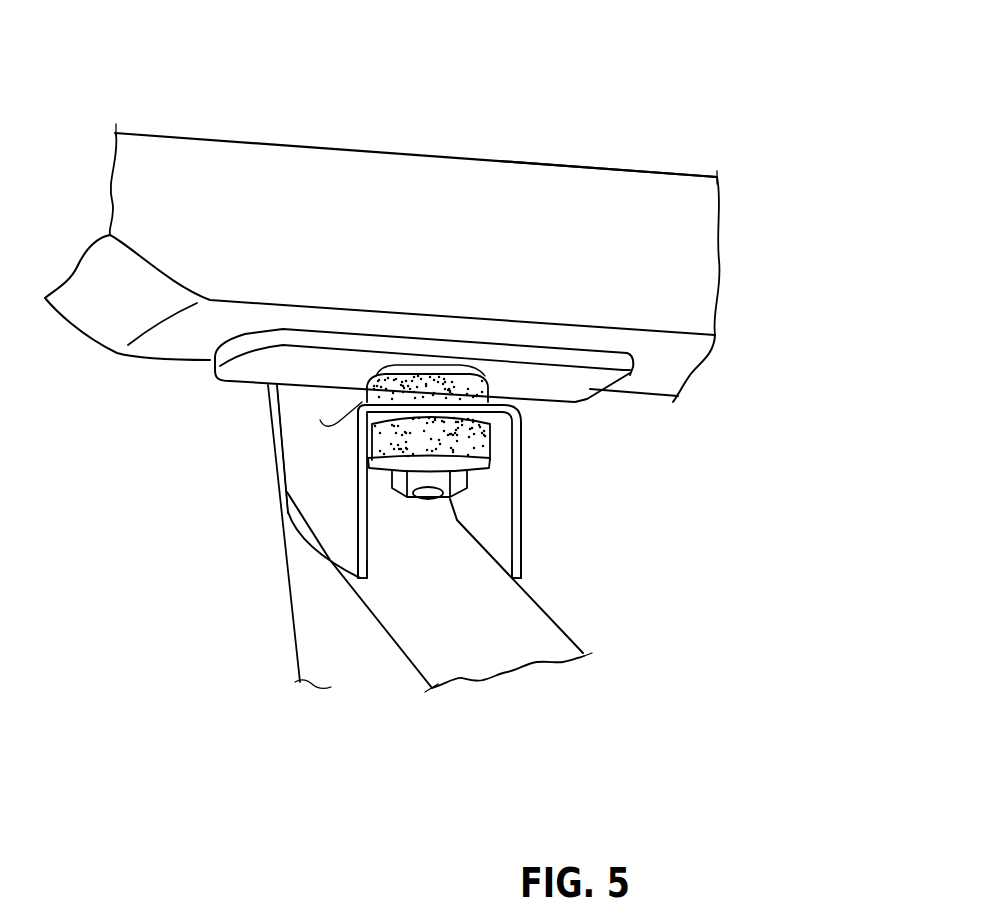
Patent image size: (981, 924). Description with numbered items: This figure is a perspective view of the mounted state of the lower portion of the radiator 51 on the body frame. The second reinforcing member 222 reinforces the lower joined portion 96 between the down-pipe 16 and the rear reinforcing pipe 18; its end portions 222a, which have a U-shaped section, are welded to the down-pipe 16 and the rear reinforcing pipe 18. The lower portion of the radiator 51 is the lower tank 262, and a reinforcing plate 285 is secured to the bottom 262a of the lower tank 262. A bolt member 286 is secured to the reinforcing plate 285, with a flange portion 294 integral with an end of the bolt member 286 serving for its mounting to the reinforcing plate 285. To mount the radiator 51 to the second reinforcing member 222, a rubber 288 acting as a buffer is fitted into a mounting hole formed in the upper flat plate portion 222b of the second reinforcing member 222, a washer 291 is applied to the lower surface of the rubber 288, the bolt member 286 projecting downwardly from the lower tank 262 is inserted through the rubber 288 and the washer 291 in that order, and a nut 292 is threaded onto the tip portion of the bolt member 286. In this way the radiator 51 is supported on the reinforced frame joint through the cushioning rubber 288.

The down-pipe 16 is at (303, 630).
The rear reinforcing pipe 18 is at (405, 623).
The radiator 51 is at (580, 177).
The lower joined portion 96 is at (289, 521).
The second reinforcing member 222 is at (317, 474).
The end portion 222a is at (322, 549).
The upper flat plate portion 222b is at (485, 420).
The lower tank 262 is at (390, 163).
The bottom 262a is at (667, 360).
The reinforcing plate 285 is at (595, 388).
The bolt member 286 is at (432, 499).
The rubber 288 is at (490, 452).
The washer 291 is at (468, 487).
The nut 292 is at (445, 499).
The flange portion 294 is at (392, 363).